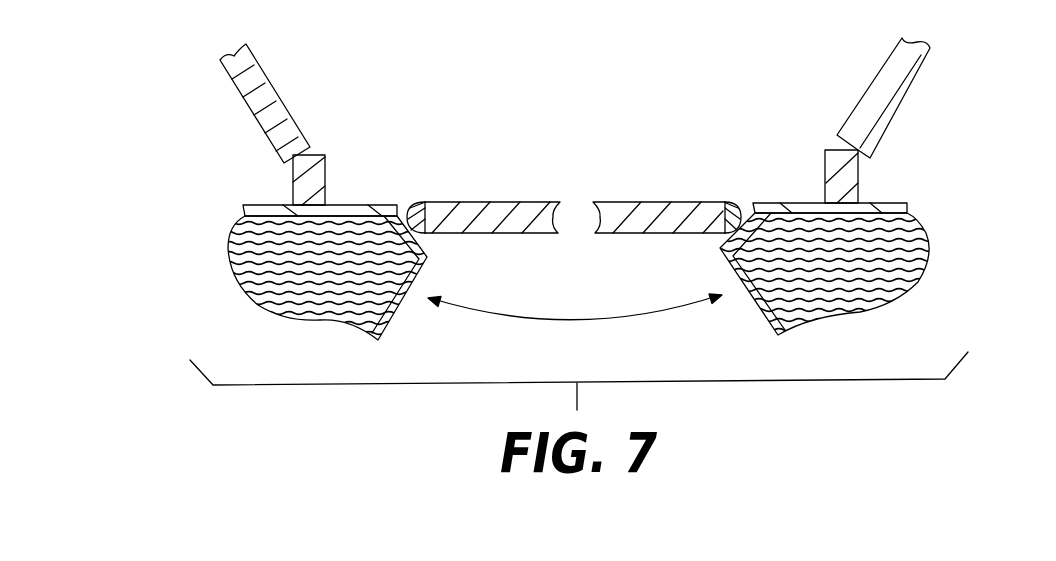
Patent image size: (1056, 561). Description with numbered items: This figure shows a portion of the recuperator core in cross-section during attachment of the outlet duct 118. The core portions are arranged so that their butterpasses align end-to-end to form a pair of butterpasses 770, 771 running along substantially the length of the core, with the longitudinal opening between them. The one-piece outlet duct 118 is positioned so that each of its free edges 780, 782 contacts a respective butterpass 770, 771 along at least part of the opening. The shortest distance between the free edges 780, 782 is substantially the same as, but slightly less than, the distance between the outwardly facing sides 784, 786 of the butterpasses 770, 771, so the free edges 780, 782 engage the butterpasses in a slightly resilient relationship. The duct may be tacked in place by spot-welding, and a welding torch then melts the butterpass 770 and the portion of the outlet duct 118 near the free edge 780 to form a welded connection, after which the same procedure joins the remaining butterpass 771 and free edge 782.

The outlet duct 118 is at (932, 82).
The butterpass 770 is at (320, 153).
The butterpass 771 is at (843, 150).
The free edge 780 is at (283, 165).
The free edge 782 is at (863, 157).
The outwardly facing side 784 is at (292, 198).
The outwardly facing side 786 is at (860, 193).